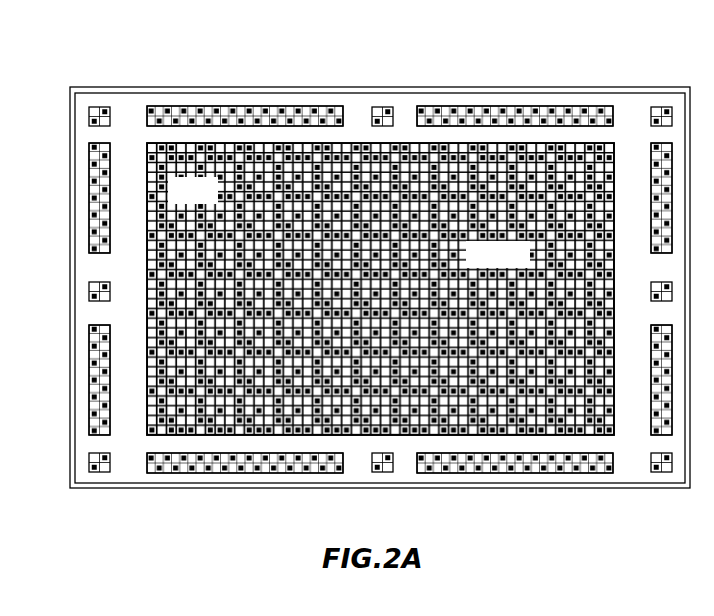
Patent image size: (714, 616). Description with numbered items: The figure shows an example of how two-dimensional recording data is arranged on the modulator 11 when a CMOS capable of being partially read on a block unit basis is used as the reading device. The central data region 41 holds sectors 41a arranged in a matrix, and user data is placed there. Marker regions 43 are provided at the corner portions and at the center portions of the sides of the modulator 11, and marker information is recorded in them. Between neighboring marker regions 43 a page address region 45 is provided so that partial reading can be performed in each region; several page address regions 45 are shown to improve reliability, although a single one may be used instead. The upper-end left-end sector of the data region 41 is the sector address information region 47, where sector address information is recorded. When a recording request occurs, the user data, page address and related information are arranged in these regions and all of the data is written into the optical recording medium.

The modulator 11 is at (563, 33).
The data region 41 is at (614, 160).
The sector 41a is at (713, 216).
The marker region 43 is at (100, 106).
The page address region 45 is at (230, 106).
The sector address information region 47 is at (193, 191).